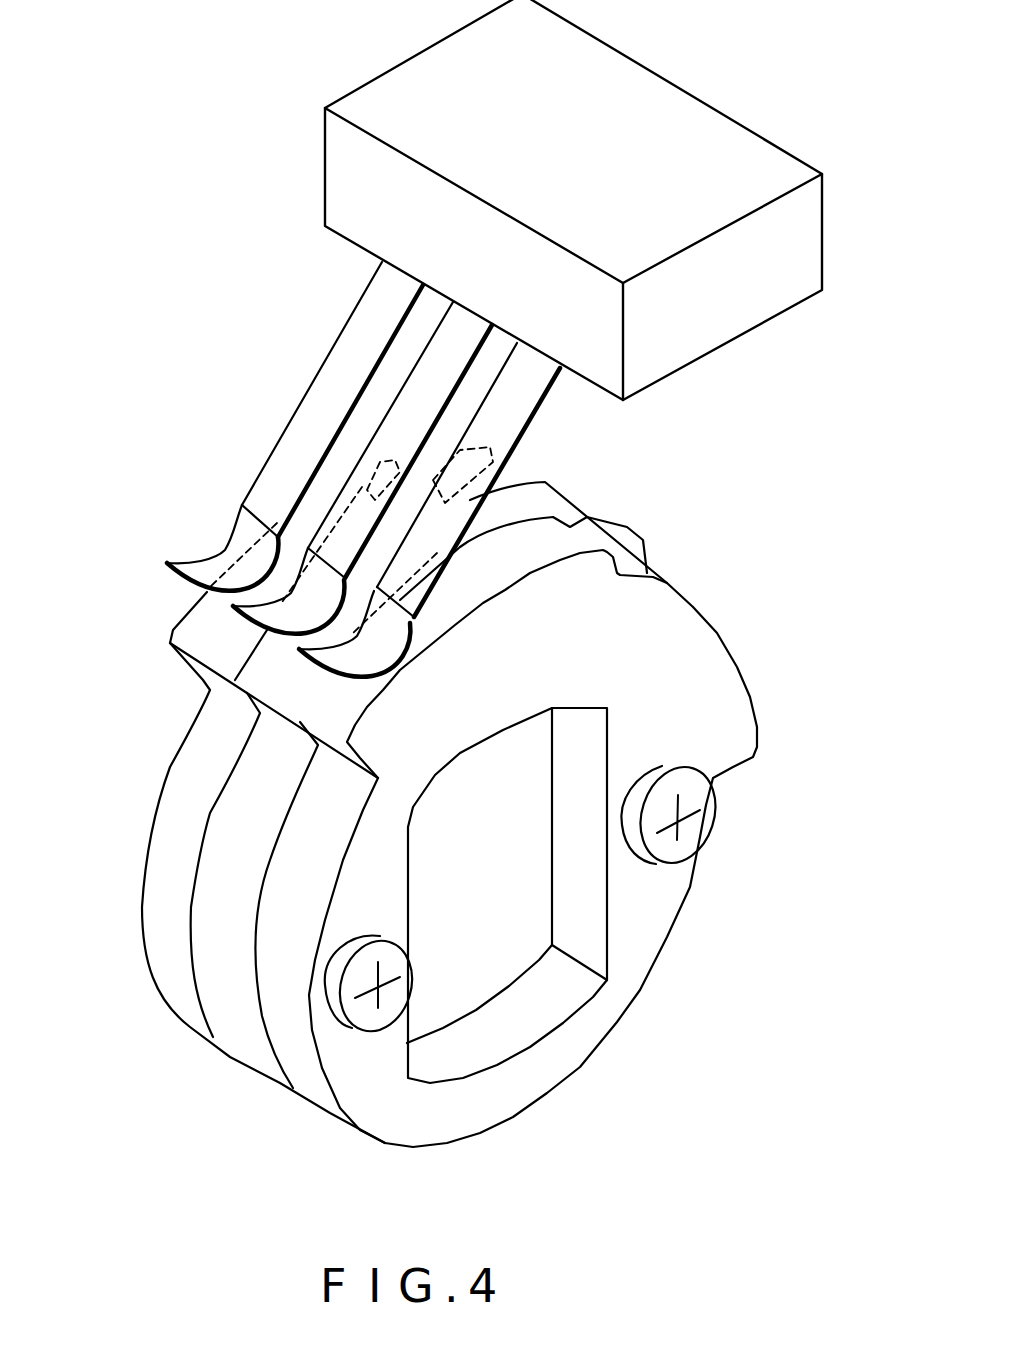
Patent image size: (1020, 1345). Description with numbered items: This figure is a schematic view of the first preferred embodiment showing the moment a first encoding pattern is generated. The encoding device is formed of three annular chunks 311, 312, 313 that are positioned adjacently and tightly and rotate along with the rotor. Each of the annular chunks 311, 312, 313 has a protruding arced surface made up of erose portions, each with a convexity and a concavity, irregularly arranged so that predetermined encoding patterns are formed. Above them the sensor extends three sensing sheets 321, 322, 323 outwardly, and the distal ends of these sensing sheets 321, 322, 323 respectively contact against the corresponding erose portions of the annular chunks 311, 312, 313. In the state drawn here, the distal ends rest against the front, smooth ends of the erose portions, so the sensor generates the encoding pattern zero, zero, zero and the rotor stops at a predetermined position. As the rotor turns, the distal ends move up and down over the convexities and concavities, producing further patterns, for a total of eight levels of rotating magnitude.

The annular chunk 311 is at (161, 907).
The annular chunk 312 is at (230, 1013).
The annular chunk 313 is at (303, 1075).
The sensing sheet 321 is at (295, 435).
The sensing sheet 322 is at (447, 347).
The sensing sheet 323 is at (533, 403).